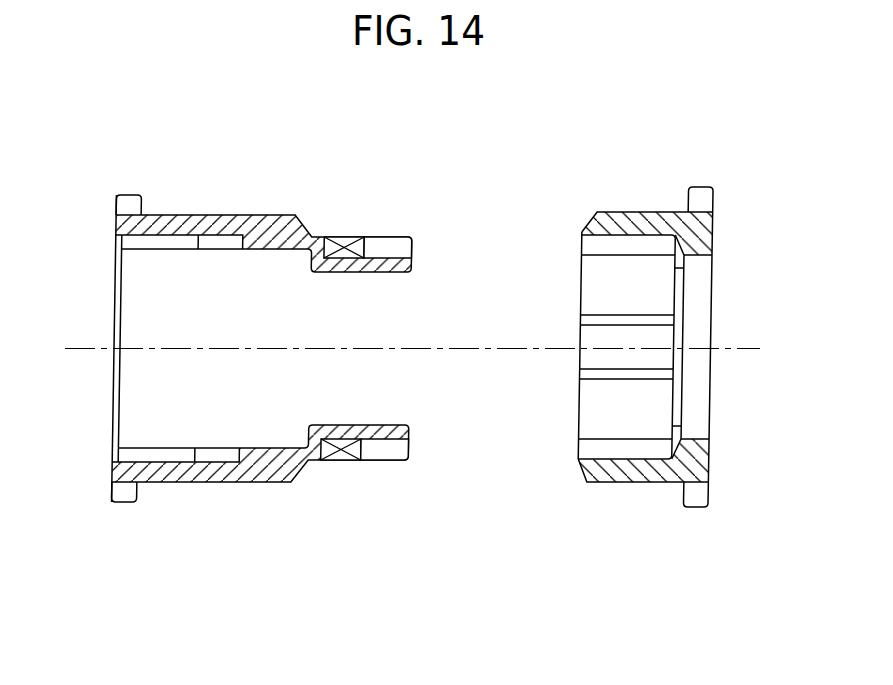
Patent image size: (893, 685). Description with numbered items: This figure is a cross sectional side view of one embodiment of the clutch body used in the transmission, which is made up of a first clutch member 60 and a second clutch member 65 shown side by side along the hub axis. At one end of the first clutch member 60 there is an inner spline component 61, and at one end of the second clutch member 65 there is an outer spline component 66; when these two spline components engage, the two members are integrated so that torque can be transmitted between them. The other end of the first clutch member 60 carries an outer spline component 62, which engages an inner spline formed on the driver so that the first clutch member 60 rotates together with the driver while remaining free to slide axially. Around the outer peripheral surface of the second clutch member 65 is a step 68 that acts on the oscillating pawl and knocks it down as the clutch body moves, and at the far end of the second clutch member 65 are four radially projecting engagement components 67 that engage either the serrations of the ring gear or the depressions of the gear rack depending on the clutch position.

The first clutch member 60 is at (631, 213).
The inner spline component 61 is at (616, 248).
The outer spline component 62 is at (705, 197).
The second clutch member 65 is at (263, 222).
The outer spline component 66 is at (398, 243).
The engagement components 67 is at (128, 205).
The step 68 is at (307, 235).